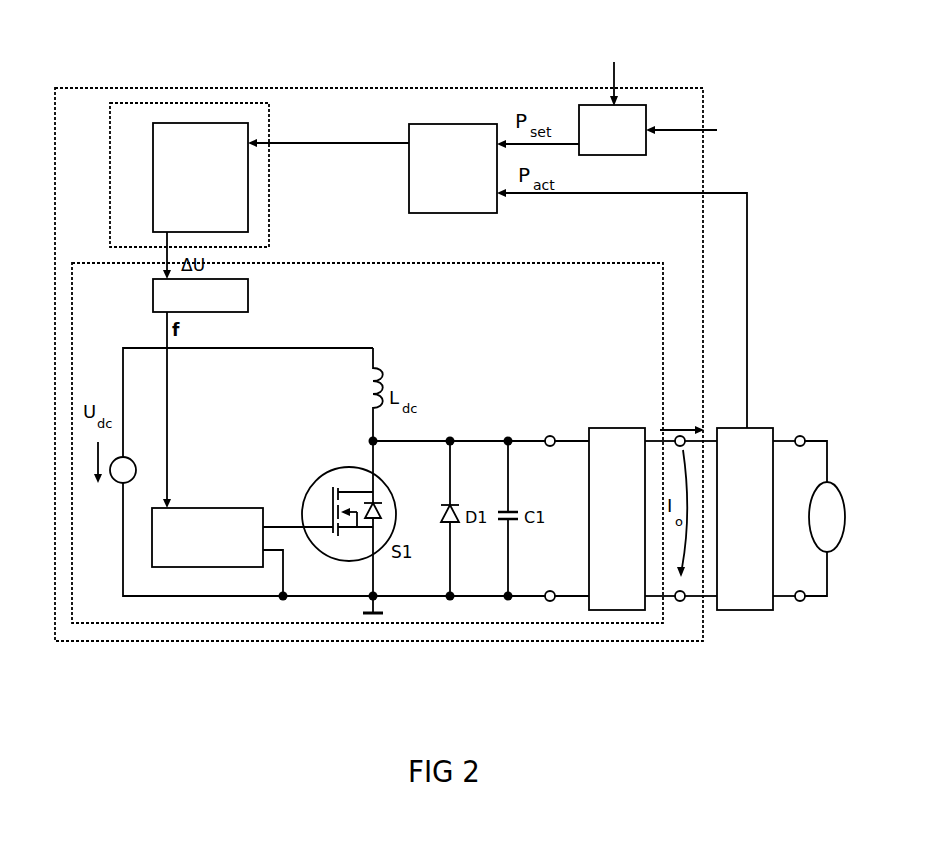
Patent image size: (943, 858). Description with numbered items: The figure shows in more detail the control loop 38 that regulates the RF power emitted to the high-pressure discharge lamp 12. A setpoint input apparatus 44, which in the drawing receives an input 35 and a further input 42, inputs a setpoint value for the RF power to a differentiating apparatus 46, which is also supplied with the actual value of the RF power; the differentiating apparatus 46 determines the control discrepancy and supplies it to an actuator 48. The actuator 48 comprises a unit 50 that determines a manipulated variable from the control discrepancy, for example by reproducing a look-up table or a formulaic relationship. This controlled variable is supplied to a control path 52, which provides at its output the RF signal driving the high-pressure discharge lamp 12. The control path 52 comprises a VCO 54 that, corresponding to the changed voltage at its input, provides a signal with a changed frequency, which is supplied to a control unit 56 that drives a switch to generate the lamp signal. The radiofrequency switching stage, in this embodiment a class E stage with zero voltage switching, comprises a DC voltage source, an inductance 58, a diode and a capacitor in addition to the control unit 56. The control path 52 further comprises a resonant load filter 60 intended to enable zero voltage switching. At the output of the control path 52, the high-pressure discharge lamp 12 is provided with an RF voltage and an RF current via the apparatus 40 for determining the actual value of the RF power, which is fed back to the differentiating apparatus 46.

The high-pressure discharge lamp 12 is at (818, 492).
The power setpoint input 35 is at (615, 71).
The control loop 38 is at (105, 88).
The apparatus for determining the actual value of the RF power 40 is at (757, 428).
The setpoint input 42 is at (695, 130).
The setpoint input apparatus 44 is at (612, 130).
The differentiating apparatus 46 is at (452, 126).
The actuator 48 is at (221, 103).
The unit 50 is at (201, 125).
The control path 52 is at (503, 263).
The VCO 54 is at (250, 296).
The control unit 56 is at (218, 508).
The inductor 58 is at (412, 381).
The resonant load filter 60 is at (613, 428).